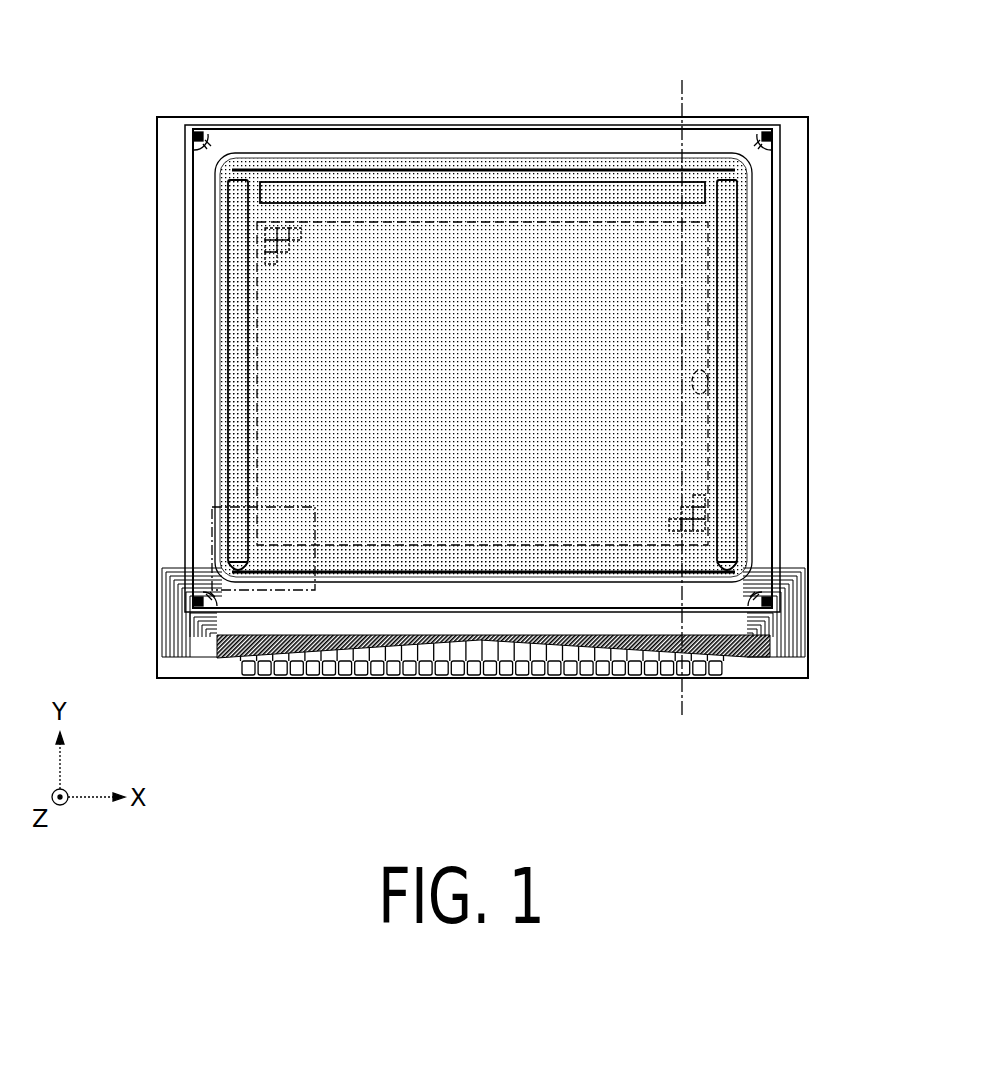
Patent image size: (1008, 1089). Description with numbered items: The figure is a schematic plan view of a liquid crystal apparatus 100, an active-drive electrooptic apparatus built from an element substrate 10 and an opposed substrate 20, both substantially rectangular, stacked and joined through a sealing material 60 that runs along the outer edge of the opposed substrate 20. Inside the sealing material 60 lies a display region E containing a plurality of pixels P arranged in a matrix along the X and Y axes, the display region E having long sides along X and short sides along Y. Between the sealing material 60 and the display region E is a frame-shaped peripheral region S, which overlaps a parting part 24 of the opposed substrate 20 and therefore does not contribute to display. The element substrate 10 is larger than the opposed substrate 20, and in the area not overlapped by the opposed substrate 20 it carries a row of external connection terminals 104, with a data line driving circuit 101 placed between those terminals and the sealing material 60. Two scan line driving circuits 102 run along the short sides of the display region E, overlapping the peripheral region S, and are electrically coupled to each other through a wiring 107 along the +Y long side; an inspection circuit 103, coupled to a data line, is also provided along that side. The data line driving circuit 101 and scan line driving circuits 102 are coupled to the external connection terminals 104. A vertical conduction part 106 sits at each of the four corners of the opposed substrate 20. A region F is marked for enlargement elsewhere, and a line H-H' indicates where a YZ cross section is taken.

The liquid crystal apparatus 100 is at (855, 41).
The element substrate 10 is at (281, 117).
The opposed substrate 20 is at (388, 127).
The vertical conduction part 106 is at (193, 136).
The sealing material 60 is at (760, 262).
The wiring 107 is at (488, 168).
The inspection circuit 103 is at (576, 181).
The scan line driving circuit 102 is at (238, 300).
The peripheral region S is at (631, 222).
The pixel P is at (302, 236).
The display region E is at (705, 380).
The region F is at (210, 545).
The data line driving circuit 101 is at (232, 617).
The external connection terminal 104 is at (340, 668).
The parting part 24 is at (486, 555).
The line H-H' H is at (688, 92).